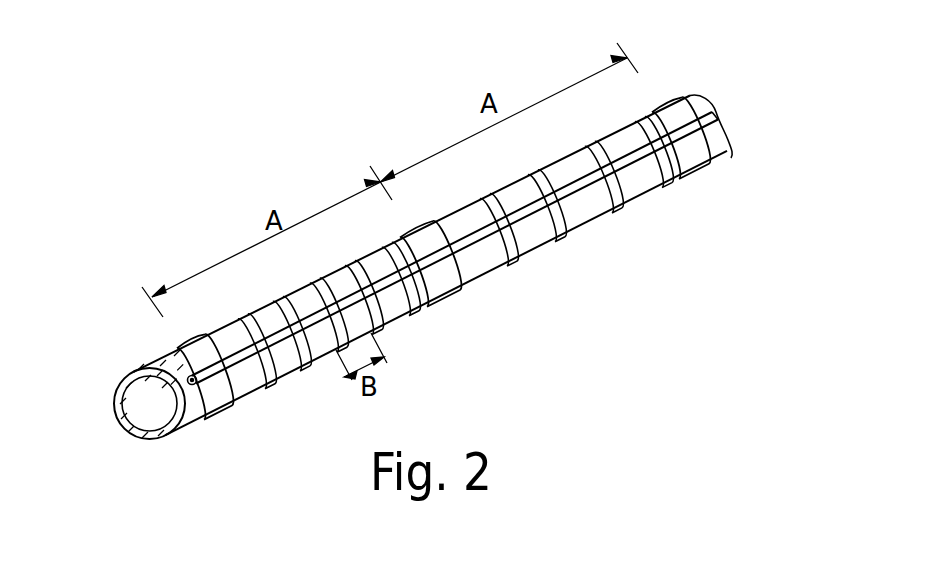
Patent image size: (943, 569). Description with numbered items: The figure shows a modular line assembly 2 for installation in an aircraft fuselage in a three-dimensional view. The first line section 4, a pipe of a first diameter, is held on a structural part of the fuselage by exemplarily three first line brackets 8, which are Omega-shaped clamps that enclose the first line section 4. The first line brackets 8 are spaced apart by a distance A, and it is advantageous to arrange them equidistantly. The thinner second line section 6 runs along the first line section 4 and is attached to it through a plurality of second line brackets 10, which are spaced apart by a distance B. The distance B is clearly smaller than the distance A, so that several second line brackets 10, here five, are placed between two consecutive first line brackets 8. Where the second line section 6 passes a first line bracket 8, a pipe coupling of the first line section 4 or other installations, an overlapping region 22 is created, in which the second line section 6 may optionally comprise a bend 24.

The modular line assembly 2 is at (713, 233).
The first line section 4 is at (627, 187).
The second line section 6 is at (568, 190).
The first line bracket 8 is at (181, 343).
The second line bracket 10 is at (527, 181).
The overlapping region 22 is at (455, 308).
The bend 24 is at (436, 243).